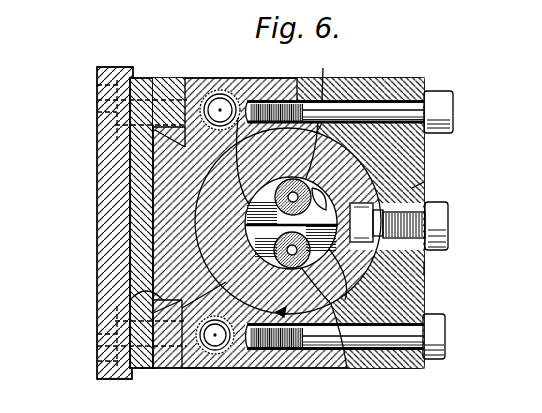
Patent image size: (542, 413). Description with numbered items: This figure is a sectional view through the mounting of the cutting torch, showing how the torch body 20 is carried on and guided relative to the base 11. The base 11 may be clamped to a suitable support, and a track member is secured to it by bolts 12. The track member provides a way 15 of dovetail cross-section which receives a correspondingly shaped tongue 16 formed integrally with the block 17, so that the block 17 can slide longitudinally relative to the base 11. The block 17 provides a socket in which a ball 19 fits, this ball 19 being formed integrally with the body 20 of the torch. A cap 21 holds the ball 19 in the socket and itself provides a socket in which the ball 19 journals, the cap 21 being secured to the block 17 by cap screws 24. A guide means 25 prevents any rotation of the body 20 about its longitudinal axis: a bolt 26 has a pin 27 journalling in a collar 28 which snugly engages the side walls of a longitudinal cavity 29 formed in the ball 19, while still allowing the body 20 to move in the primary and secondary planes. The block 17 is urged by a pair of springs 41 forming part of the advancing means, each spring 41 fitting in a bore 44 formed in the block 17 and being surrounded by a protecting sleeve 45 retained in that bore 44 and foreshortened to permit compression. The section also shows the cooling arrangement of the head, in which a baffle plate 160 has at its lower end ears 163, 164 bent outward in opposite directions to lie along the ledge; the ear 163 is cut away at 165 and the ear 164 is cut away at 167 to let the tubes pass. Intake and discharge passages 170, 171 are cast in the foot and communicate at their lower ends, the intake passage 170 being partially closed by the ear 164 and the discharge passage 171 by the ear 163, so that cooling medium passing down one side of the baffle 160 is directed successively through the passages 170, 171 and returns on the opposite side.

The base 11 is at (97, 168).
The bolts 12 is at (97, 115).
The way 15 is at (113, 310).
The tongue 16 is at (157, 221).
The block 17 is at (163, 196).
The ball 19 is at (200, 264).
The body 20 is at (245, 368).
The cap 21 is at (412, 188).
The cap screws 24 is at (440, 108).
The guide means 25 is at (467, 224).
The bolt 26 is at (448, 212).
The pin 27 is at (428, 258).
The collar 28 is at (427, 268).
The longitudinal cavity 29 is at (424, 197).
The springs 41 is at (202, 98).
The bore 44 is at (197, 112).
The protecting sleeve 45 is at (185, 112).
The baffle plate 160 is at (193, 369).
The ear 163 is at (243, 125).
The ear 164 is at (371, 297).
The cut-away 165 is at (316, 90).
The cut-away 167 is at (348, 368).
The intake passage 170 is at (327, 200).
The discharge passage 171 is at (148, 369).